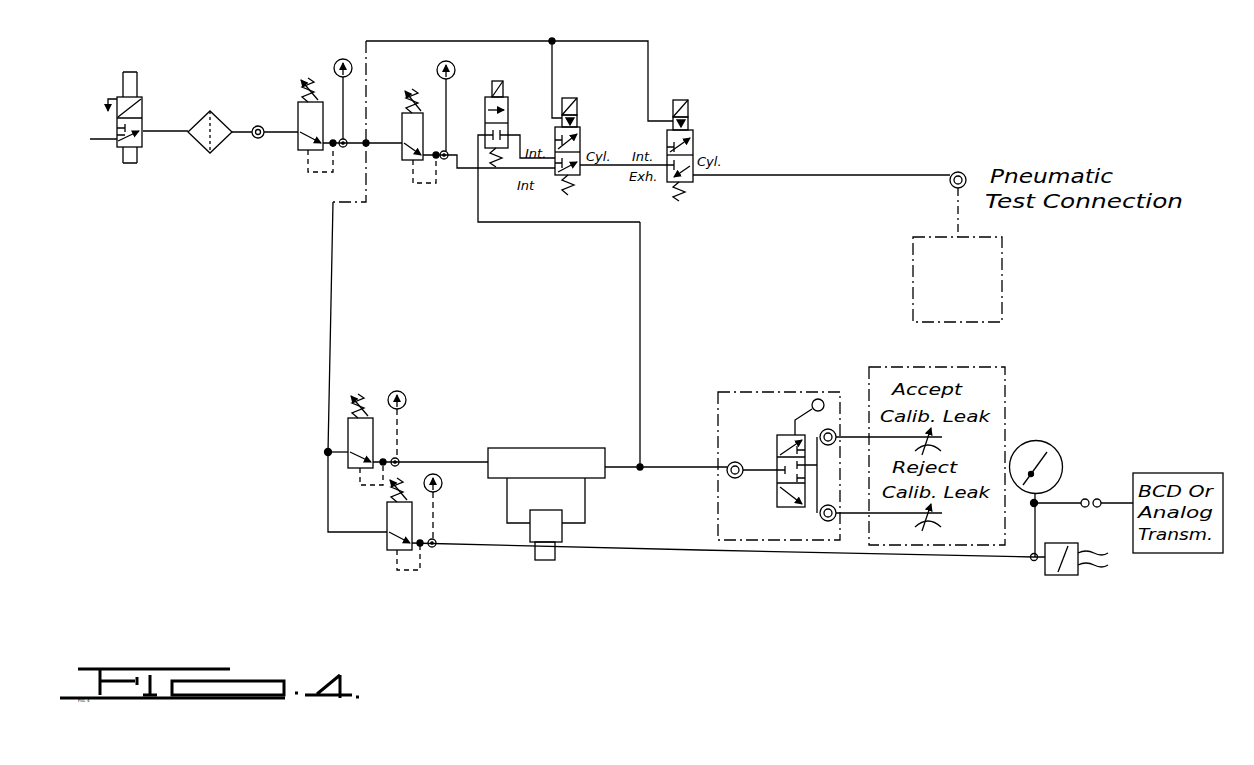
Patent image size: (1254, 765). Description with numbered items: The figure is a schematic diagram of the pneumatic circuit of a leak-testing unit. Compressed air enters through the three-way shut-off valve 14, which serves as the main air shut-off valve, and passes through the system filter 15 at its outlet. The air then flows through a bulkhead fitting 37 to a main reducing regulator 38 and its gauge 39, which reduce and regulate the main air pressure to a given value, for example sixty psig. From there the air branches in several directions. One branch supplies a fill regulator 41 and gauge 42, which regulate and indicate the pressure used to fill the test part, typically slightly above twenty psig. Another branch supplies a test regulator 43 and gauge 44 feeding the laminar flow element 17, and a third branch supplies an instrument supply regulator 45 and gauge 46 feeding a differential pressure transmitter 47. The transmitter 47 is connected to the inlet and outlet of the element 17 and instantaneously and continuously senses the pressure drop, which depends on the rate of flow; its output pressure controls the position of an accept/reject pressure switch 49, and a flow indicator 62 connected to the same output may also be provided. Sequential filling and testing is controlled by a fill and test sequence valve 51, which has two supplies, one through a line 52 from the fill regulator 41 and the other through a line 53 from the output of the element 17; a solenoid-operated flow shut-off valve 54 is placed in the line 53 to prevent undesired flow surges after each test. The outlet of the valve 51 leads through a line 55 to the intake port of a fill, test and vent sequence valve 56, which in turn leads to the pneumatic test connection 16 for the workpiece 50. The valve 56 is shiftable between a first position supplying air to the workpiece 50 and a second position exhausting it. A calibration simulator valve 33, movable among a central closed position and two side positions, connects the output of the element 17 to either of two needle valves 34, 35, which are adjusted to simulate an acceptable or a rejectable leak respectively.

The three-way shut-off valve 14 is at (142, 106).
The filter 15 is at (206, 146).
The bulkhead fitting 37 is at (258, 140).
The main reducing regulator 38 is at (297, 113).
The gauge 39 is at (342, 58).
The fill regulator 41 is at (402, 125).
The gauge 42 is at (437, 68).
The solenoid-operated flow shut-off valve 54 is at (501, 86).
The fill and test sequence valve 51 is at (582, 151).
The line 55 is at (576, 183).
The fill, test and vent sequence valve 56 is at (694, 146).
The line 52 is at (478, 172).
The line 53 is at (481, 225).
The pneumatic test connection 16 is at (958, 172).
The workpiece 50 is at (1012, 278).
The laminar flow element 17 is at (546, 448).
The test regulator 43 is at (348, 430).
The gauge 44 is at (405, 395).
The instrument supply regulator 45 is at (392, 516).
The gauge 46 is at (442, 488).
The differential pressure transmitter 47 is at (530, 530).
The calibration simulator valve 33 is at (777, 441).
The needle valve 34 is at (940, 441).
The needle valve 35 is at (940, 517).
The flow indicator 62 is at (1060, 451).
The accept/reject pressure switch 49 is at (1068, 578).